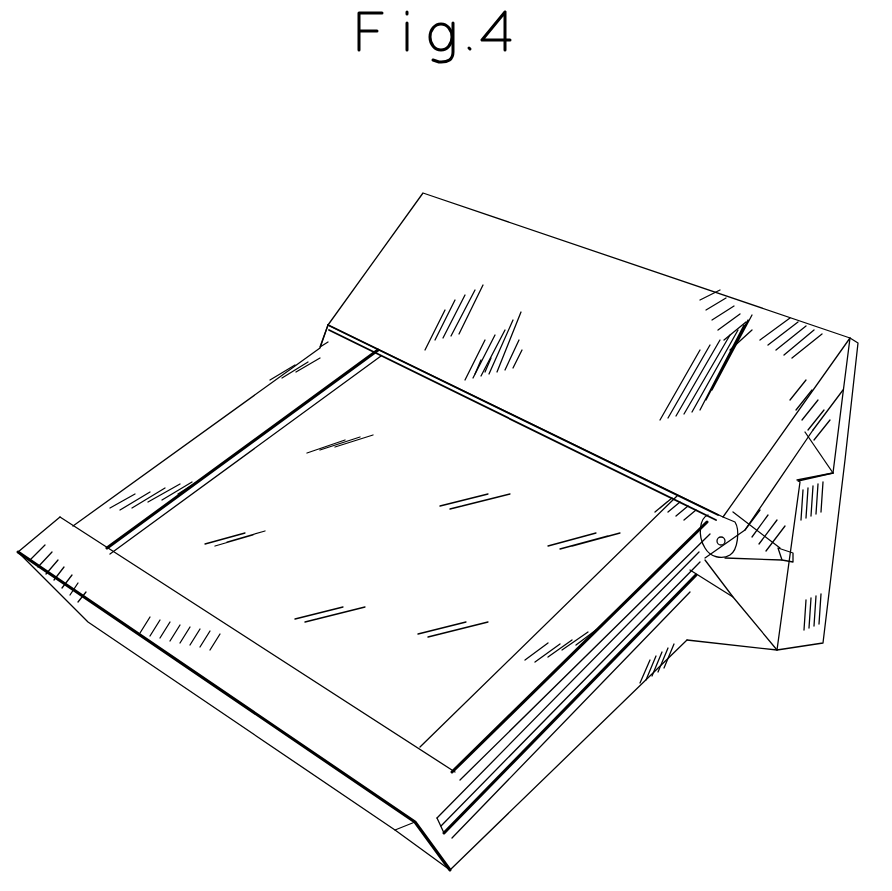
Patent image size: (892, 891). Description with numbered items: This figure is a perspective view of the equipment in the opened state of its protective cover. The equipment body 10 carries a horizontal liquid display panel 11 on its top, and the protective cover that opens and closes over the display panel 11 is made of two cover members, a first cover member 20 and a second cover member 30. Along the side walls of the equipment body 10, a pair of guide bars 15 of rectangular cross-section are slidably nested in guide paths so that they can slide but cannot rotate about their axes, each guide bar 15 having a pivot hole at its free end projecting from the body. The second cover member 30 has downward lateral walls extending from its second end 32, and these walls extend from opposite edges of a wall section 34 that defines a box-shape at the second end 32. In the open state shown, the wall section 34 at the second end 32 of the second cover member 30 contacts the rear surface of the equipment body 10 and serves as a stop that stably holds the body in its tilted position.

The equipment body 10 is at (233, 713).
The liquid display panel 11 is at (257, 487).
The guide bar 15 is at (733, 582).
The first cover member 20 is at (628, 296).
The second cover member 30 is at (827, 583).
The second end 32 is at (827, 647).
The wall section 34 is at (763, 632).